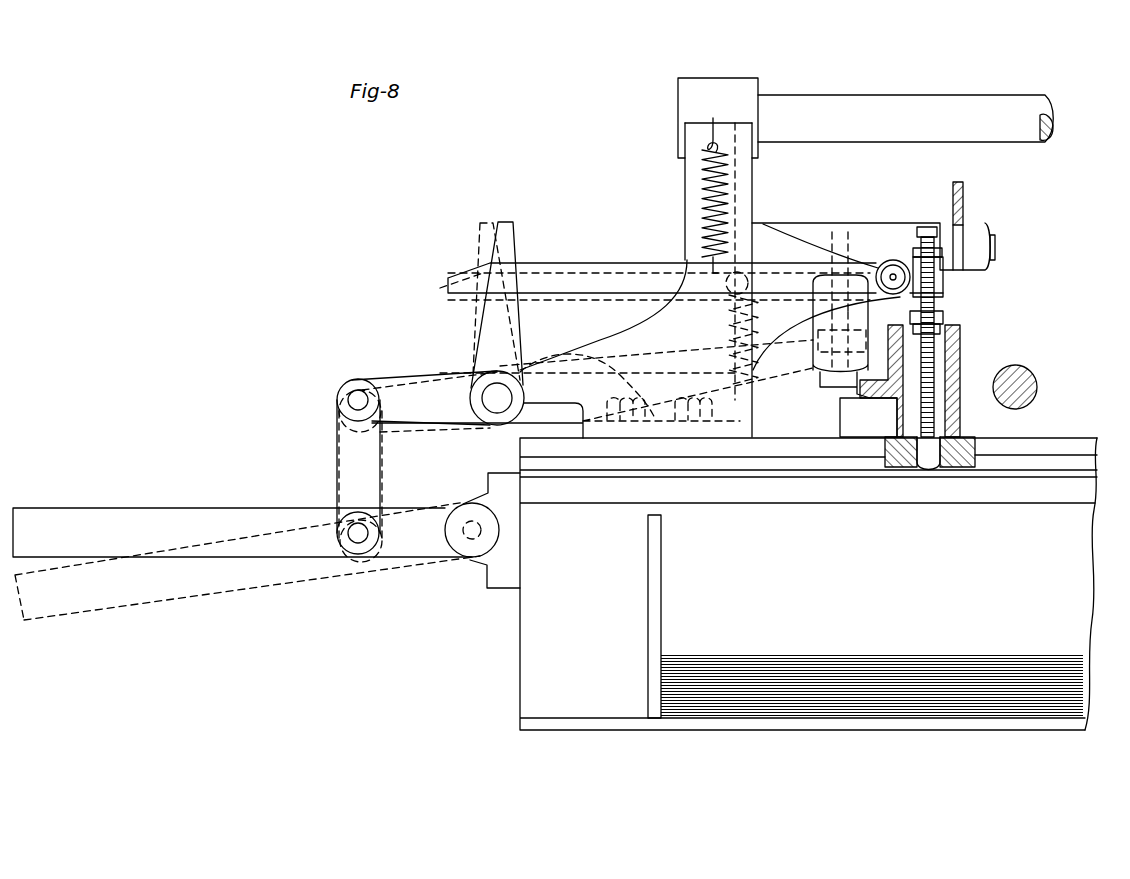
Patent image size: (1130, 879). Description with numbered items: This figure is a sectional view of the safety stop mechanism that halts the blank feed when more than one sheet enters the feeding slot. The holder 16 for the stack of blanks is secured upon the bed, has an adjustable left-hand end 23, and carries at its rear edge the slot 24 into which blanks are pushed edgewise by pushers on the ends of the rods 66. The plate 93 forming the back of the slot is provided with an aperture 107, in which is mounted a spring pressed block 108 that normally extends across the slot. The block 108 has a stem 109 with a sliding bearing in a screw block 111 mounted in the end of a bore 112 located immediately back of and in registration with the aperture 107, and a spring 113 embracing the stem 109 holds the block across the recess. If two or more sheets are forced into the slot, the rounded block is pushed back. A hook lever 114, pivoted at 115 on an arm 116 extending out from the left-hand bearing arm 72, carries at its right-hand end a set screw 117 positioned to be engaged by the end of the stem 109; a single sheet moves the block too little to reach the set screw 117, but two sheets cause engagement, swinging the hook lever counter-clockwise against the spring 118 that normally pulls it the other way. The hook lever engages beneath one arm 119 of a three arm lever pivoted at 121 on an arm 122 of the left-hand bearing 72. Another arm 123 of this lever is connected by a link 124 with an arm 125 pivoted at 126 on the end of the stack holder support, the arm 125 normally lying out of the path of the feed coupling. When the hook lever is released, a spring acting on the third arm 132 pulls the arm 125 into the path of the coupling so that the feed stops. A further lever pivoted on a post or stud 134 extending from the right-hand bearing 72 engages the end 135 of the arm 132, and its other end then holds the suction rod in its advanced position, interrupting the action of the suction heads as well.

The holder 16 is at (1015, 700).
The adjustable left-hand end 23 is at (655, 712).
The slot 24 is at (620, 470).
The rod 66 is at (1038, 385).
The bearing arm 72 is at (752, 94).
The plate 93 is at (1045, 448).
The aperture 107 is at (940, 458).
The spring pressed block 108 is at (960, 335).
The stem 109 is at (945, 302).
The screw block 111 is at (913, 323).
The bore 112 is at (896, 428).
The spring 113 is at (960, 364).
The hook lever 114 is at (568, 263).
The pivot 115 is at (893, 272).
The arm 116 is at (760, 240).
The set screw 117 is at (926, 225).
The spring 118 is at (703, 203).
The arm 119 is at (505, 237).
The pivot 121 is at (493, 405).
The arm 122 is at (550, 408).
The arm 123 is at (400, 377).
The link 124 is at (337, 456).
The arm 125 is at (318, 548).
The pivot 126 is at (472, 533).
The third arm 132 is at (800, 402).
The post or stud 134 is at (995, 242).
The end 135 is at (838, 388).